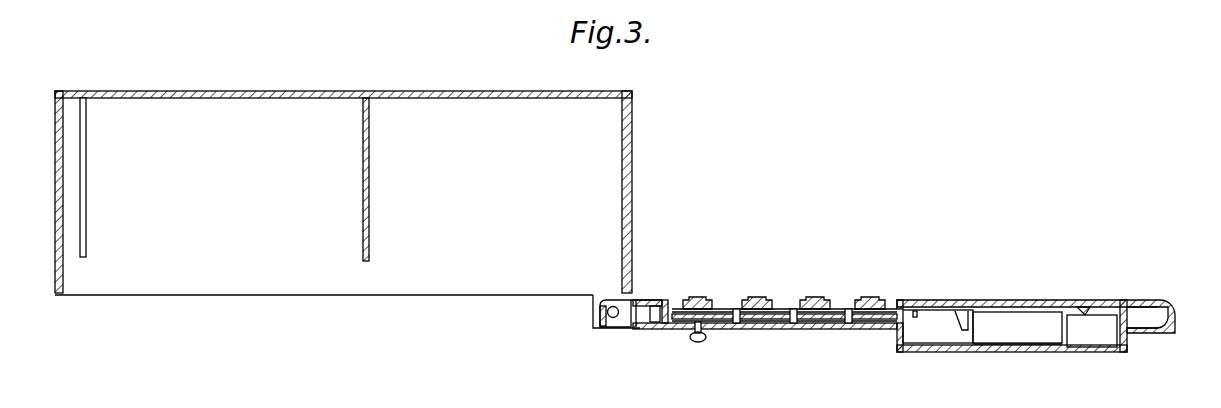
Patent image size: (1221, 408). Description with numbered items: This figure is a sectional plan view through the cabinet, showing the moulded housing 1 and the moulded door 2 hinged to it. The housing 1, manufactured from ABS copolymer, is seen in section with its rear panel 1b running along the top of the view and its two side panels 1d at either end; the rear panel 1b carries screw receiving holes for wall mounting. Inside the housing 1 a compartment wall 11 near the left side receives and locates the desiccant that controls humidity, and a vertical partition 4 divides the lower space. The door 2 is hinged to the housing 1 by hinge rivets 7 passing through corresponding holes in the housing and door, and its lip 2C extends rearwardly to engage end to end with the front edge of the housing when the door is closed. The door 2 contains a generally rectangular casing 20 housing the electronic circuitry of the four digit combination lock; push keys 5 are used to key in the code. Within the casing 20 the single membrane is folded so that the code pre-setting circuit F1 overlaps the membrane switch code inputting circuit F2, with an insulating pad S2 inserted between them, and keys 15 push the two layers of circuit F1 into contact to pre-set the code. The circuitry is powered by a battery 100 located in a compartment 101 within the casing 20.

The moulded housing 1 is at (350, 163).
The rear panel 1b is at (433, 88).
The side panels 1d is at (54, 159).
The compartment wall 11 is at (86, 193).
The vertical partition 4 is at (370, 195).
The moulded door 2 is at (900, 313).
The hinge rivets 7 is at (612, 329).
The push keys 5 is at (698, 296).
The code pre-setting circuit F1 is at (671, 318).
The insulating pad S2 is at (772, 321).
The membrane switch code inputting circuit F2 is at (830, 322).
The keys 15 is at (698, 345).
The casing 20 is at (920, 357).
The battery 100 is at (1031, 323).
The compartment 101 is at (1003, 345).
The top lip 2C is at (1178, 333).